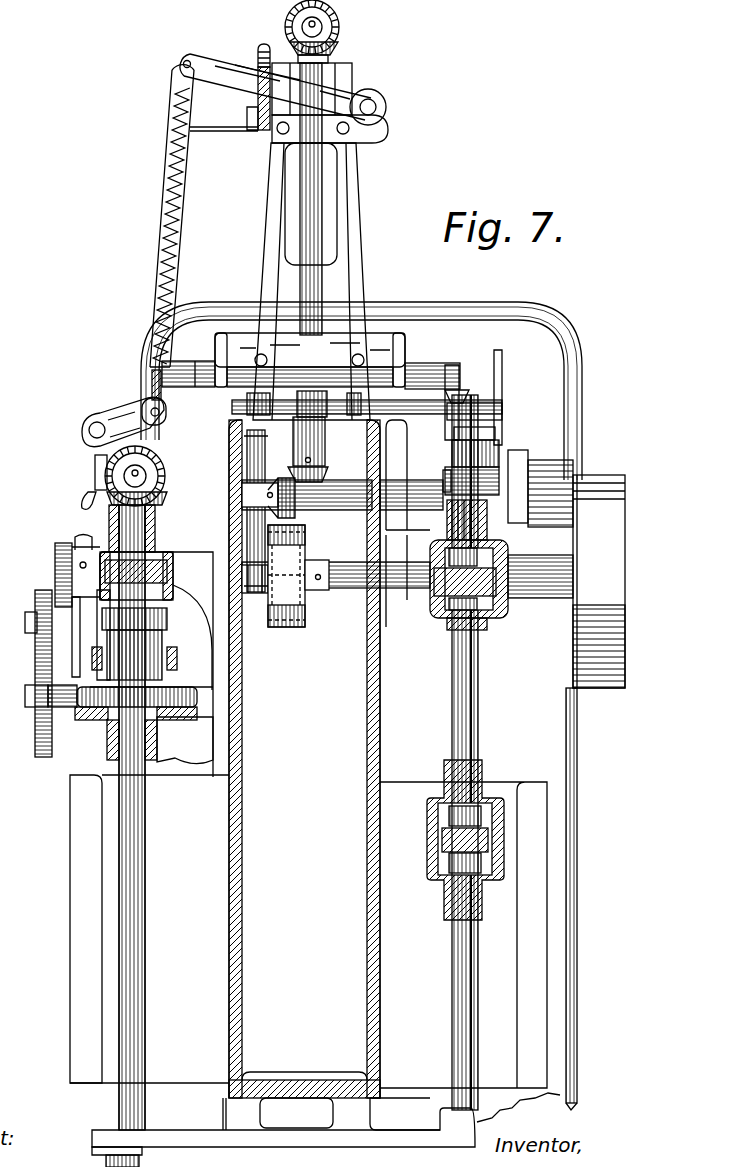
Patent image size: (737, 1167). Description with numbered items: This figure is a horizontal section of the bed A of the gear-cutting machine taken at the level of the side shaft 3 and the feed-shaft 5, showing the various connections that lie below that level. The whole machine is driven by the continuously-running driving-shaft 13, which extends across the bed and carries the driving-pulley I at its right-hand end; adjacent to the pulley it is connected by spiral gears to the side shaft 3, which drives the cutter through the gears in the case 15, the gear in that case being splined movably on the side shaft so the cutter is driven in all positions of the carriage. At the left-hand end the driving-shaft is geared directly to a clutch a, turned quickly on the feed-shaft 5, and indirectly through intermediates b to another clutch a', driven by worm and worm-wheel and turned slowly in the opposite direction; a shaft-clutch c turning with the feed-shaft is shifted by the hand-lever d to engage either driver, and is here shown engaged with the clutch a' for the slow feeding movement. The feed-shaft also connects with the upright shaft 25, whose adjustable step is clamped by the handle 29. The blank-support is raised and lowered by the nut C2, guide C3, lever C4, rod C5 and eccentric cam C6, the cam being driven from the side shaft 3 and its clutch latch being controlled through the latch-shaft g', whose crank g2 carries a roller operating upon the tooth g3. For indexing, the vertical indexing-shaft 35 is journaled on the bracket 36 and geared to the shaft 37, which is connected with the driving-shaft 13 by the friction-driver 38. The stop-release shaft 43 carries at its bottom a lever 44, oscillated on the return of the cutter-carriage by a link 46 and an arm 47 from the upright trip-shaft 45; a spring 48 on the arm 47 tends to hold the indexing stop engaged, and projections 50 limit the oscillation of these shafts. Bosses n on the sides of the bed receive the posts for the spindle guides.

The side shaft 3 is at (479, 697).
The feed-shaft 5 is at (140, 898).
The driving-shaft 13 is at (355, 587).
The gear case 15 is at (493, 800).
The upright shaft 25 is at (165, 478).
The clamp-screw handle 29 is at (82, 497).
The vertical indexing-shaft 35 is at (340, 27).
The bracket 36 is at (268, 193).
The shaft 37 is at (320, 178).
The friction-driver 38 is at (289, 627).
The stop-release shaft 43 is at (378, 108).
The lever 44 is at (260, 62).
The upright trip-shaft 45 is at (92, 418).
The link 46 is at (173, 137).
The arm 47 is at (158, 424).
The spring 48 is at (165, 196).
The projections 50 is at (265, 34).
The horizontal bed A is at (381, 728).
The driving-pulley I is at (599, 581).
The clutch a is at (147, 619).
The clutch a' is at (174, 703).
The intermediates b is at (42, 590).
The shaft-clutch c is at (140, 648).
The hand-lever d is at (176, 665).
The latch-shaft g' is at (310, 360).
The crank g2 is at (466, 395).
The tooth g3 is at (455, 412).
The nut C2 is at (492, 482).
The vertical guide C3 is at (499, 442).
The lever C4 is at (498, 424).
The rod C5 is at (465, 425).
The eccentric cam C6 is at (530, 460).
The bosses n is at (70, 968).